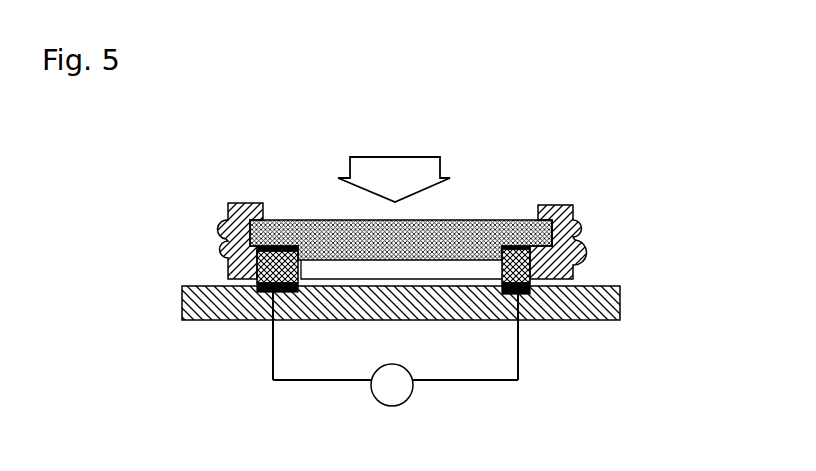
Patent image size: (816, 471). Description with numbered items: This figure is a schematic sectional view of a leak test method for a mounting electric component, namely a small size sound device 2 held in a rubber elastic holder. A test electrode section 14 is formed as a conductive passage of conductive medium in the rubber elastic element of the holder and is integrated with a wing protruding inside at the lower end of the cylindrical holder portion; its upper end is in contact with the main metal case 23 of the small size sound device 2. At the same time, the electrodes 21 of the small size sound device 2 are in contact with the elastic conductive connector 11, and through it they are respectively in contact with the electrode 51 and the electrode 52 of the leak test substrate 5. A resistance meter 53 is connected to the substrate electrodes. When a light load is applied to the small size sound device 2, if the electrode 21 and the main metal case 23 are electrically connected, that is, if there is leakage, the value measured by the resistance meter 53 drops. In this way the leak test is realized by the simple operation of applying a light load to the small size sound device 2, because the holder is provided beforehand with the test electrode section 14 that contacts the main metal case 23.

The small size sound device 2 is at (461, 216).
The leak test substrate 5 is at (629, 302).
The elastic conductive connector 11 is at (254, 268).
The test electrode section 14 is at (576, 251).
The electrode 21 is at (277, 243).
The main metal case 23 is at (544, 216).
The electrode 51 is at (250, 292).
The electrode 52 is at (532, 290).
The resistance meter 53 is at (419, 392).